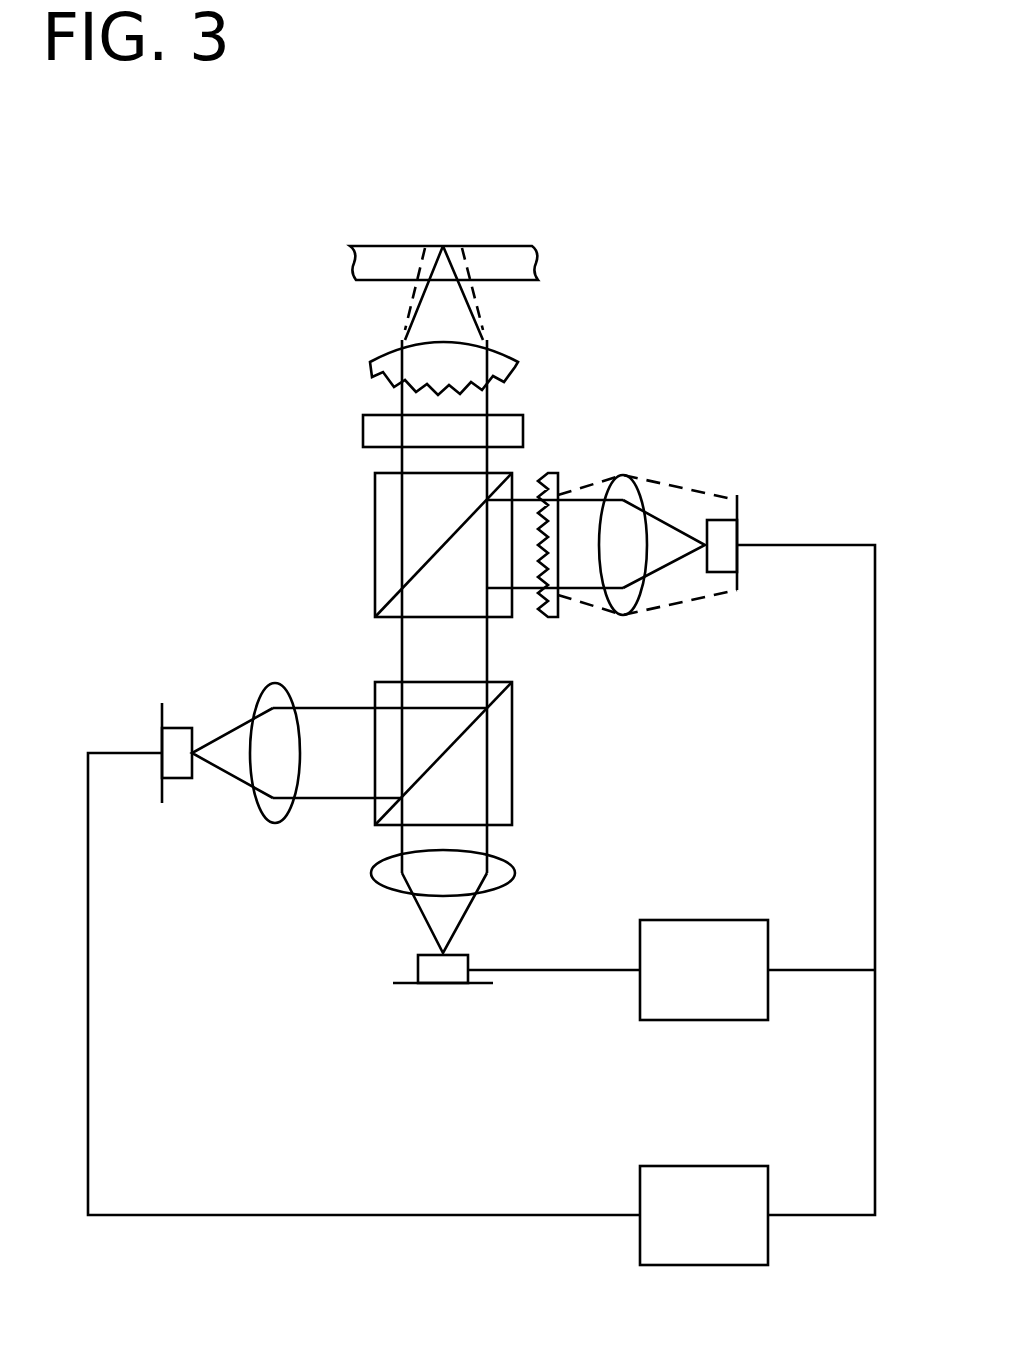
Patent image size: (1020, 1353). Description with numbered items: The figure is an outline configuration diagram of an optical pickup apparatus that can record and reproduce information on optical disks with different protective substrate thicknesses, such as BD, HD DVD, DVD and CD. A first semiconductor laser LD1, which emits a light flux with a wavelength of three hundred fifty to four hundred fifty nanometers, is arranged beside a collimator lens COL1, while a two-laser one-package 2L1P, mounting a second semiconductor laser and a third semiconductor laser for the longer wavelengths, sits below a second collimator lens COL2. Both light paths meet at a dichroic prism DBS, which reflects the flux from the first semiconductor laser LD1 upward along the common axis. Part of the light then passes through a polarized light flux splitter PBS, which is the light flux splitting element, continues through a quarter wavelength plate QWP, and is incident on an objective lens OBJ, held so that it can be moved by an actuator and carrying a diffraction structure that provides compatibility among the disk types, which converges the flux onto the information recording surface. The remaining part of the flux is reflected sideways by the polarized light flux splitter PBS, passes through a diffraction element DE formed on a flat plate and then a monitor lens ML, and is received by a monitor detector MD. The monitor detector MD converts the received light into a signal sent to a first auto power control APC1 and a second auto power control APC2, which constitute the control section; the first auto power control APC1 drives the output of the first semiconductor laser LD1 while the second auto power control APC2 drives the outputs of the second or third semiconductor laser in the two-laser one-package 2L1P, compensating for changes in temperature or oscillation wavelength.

The objective lens OBJ is at (370, 357).
The quarter wavelength plate QWP is at (363, 431).
The polarized light flux splitter PBS is at (375, 536).
The diffraction element DE is at (558, 617).
The monitor lens ML is at (645, 490).
The monitor detector MD is at (740, 580).
The dichroic prism DBS is at (512, 753).
The first semiconductor laser LD1 is at (160, 800).
The first collimator lens COL1 is at (265, 823).
The second collimator lens COL2 is at (388, 890).
The 2-laser 1-package 2L1P is at (437, 985).
The first auto power control APC1 is at (704, 1215).
The second auto power control APC2 is at (704, 970).